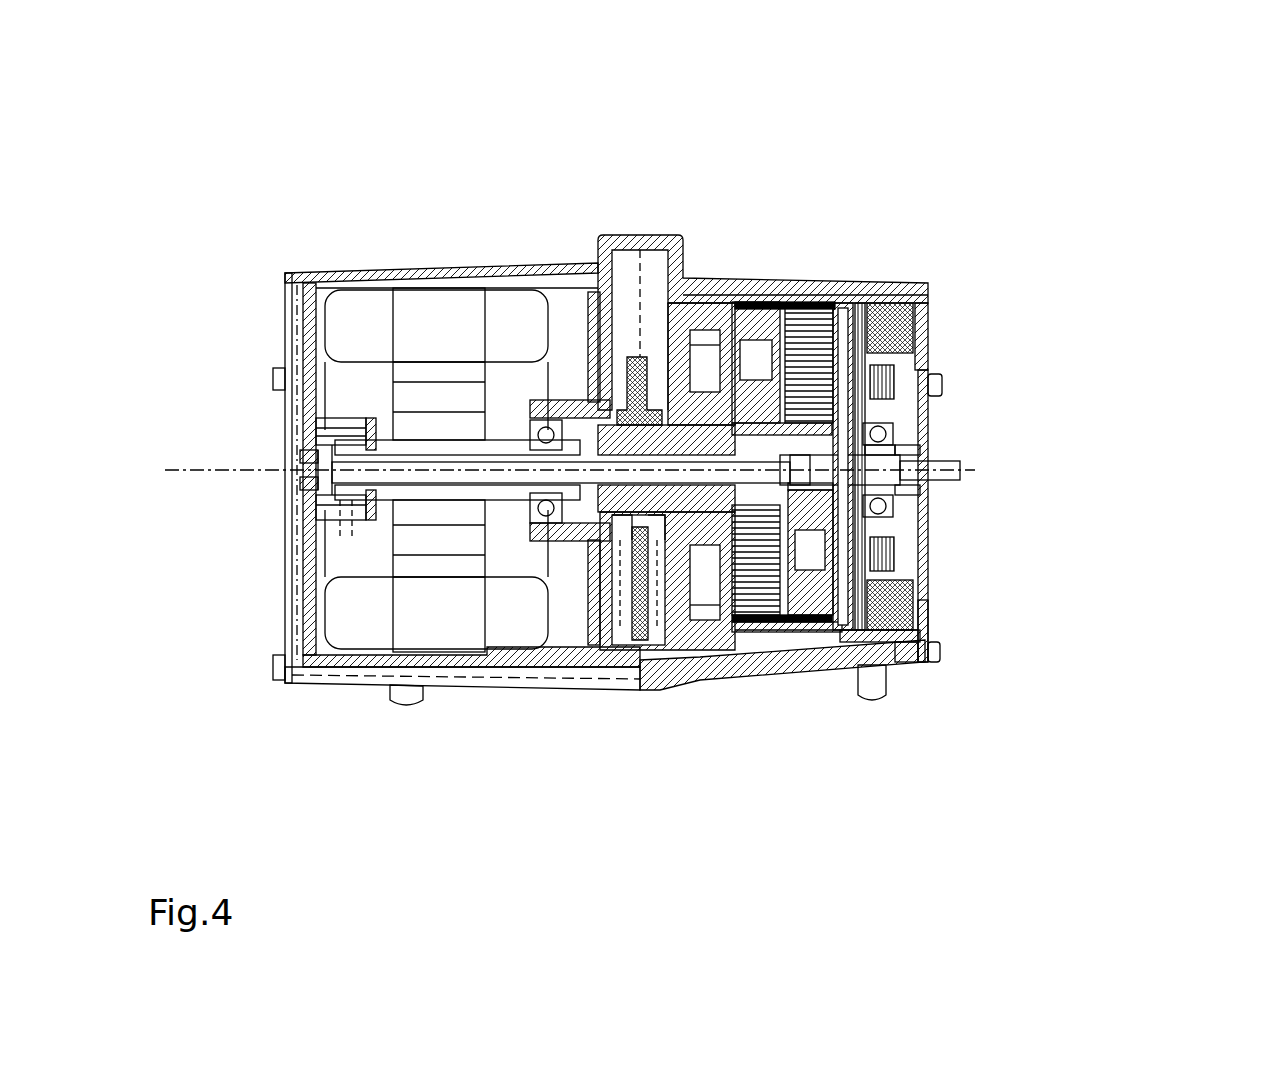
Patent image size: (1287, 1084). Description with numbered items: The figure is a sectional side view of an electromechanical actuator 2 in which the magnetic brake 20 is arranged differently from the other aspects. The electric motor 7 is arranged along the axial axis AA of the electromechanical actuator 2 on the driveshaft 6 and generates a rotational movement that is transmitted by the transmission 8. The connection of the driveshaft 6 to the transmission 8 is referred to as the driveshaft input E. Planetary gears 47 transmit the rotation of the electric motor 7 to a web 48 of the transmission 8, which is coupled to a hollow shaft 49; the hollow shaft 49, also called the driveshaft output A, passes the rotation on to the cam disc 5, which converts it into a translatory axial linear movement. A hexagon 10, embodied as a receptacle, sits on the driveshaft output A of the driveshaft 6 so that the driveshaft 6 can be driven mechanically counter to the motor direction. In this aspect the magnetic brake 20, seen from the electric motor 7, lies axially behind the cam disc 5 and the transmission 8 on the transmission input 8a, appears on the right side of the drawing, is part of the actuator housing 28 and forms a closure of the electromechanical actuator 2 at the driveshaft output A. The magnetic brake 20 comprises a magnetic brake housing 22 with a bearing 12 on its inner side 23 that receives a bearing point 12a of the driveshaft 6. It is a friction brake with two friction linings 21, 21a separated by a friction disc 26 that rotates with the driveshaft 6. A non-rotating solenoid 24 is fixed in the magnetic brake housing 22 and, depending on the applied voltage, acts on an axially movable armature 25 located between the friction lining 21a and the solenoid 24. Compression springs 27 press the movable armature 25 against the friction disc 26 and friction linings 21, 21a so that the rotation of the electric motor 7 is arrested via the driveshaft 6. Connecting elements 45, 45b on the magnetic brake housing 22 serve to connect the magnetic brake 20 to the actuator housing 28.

The electromechanical actuator 2 is at (1125, 155).
The cam disc 5 is at (636, 648).
The driveshaft 6 is at (388, 430).
The electric motor 7 is at (418, 276).
The transmission 8 is at (830, 288).
The transmission input 8a is at (875, 457).
The hexagon 10 is at (933, 483).
The bearing 12 is at (905, 445).
The bearing point 12a is at (930, 482).
The magnetic brake 20 is at (935, 308).
The friction lining 21 is at (858, 648).
The friction lining 21a is at (865, 668).
The magnetic brake housing 22 is at (927, 612).
The inner side 23 is at (875, 420).
The solenoid 24 is at (905, 302).
The movable armature 25 is at (900, 665).
The friction disc 26 is at (850, 300).
The compression springs 27 is at (905, 368).
The actuator housing 28 is at (897, 650).
The connecting element 45 is at (942, 375).
The connecting element 45b is at (940, 653).
The planetary gears 47 is at (797, 325).
The web 48 is at (745, 500).
The hollow shaft 49 is at (650, 380).
The driveshaft output A is at (603, 427).
The axial axis AA is at (175, 473).
The driveshaft input E is at (792, 470).